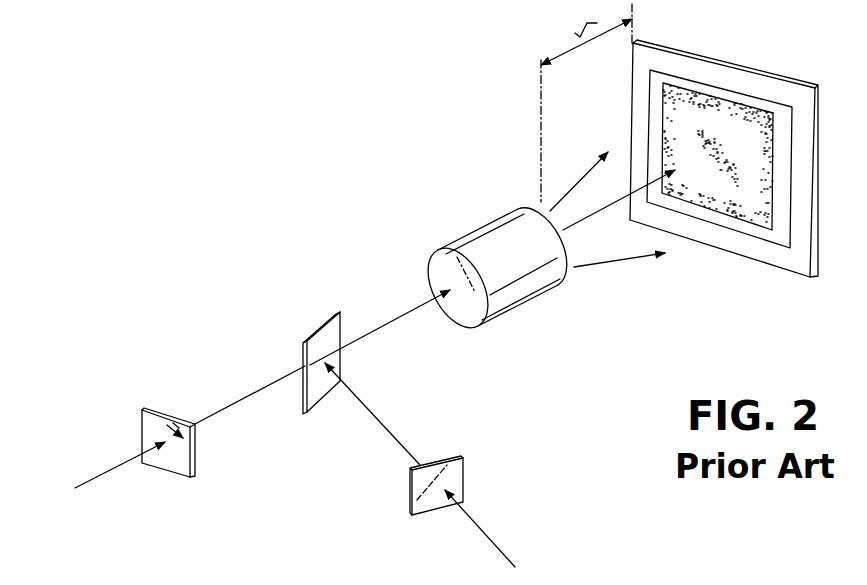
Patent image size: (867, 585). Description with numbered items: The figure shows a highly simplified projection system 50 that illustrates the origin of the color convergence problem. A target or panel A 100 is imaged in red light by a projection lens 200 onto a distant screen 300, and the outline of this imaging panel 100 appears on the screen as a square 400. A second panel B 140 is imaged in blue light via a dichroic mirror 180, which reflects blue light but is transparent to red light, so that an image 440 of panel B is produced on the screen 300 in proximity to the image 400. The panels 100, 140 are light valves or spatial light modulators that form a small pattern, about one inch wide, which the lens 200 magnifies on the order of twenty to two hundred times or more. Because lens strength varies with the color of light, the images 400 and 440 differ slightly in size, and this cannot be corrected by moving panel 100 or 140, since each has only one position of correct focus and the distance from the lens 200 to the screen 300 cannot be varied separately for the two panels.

The projection system 50 is at (410, 198).
The panel A 100 is at (177, 465).
The panel B 140 is at (412, 502).
The dichroic mirror 180 is at (305, 342).
The projection lens 200 is at (525, 283).
The screen 300 is at (818, 80).
The square 400 is at (730, 122).
The image of the panel 440 is at (760, 230).